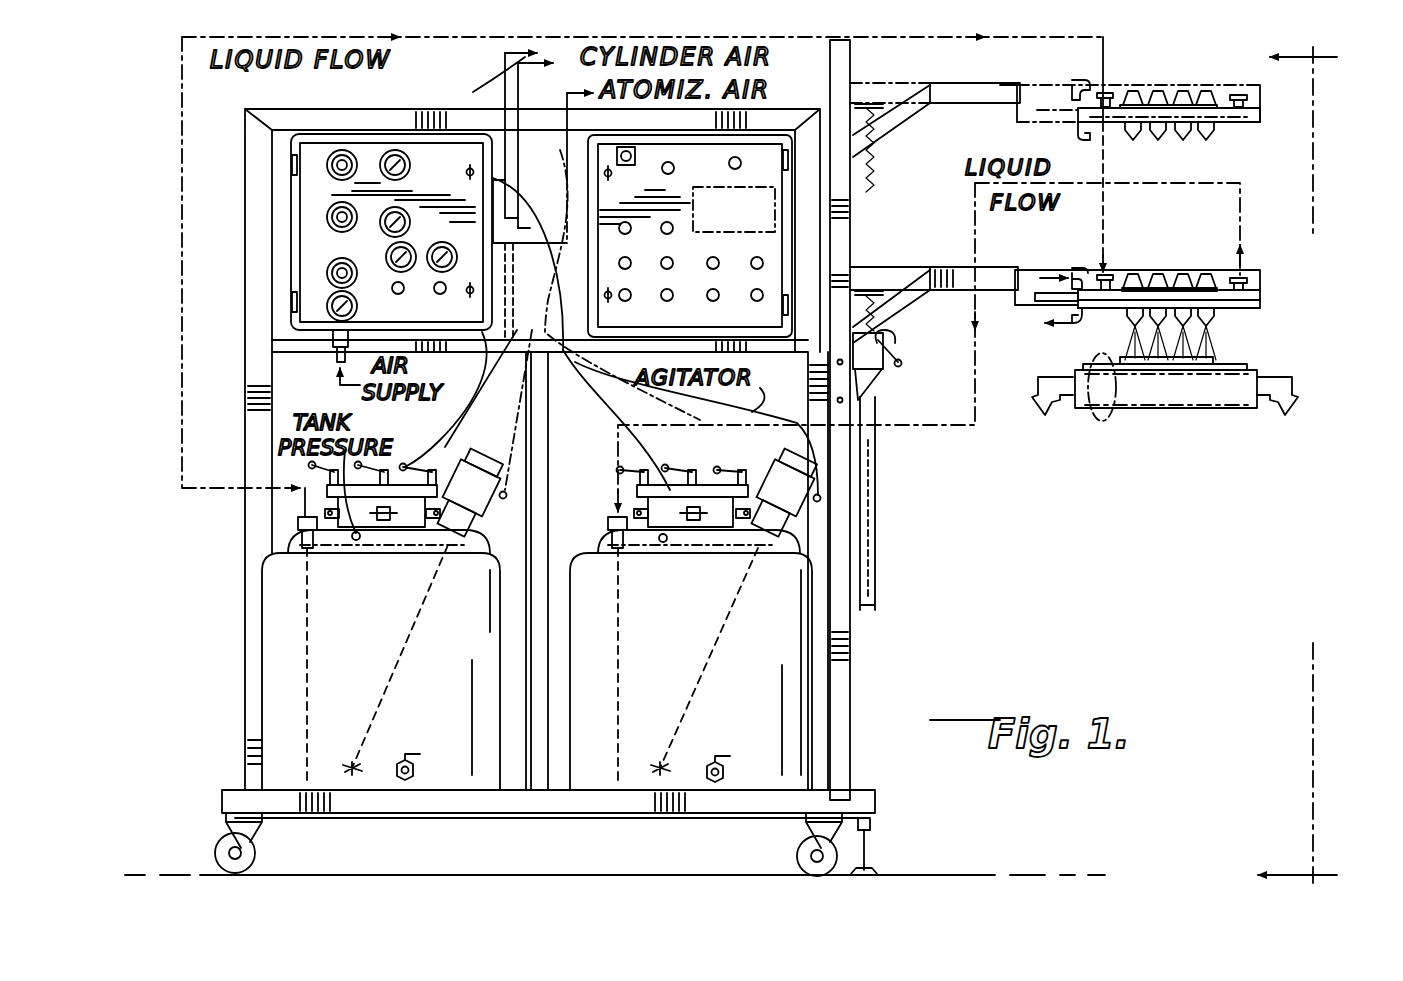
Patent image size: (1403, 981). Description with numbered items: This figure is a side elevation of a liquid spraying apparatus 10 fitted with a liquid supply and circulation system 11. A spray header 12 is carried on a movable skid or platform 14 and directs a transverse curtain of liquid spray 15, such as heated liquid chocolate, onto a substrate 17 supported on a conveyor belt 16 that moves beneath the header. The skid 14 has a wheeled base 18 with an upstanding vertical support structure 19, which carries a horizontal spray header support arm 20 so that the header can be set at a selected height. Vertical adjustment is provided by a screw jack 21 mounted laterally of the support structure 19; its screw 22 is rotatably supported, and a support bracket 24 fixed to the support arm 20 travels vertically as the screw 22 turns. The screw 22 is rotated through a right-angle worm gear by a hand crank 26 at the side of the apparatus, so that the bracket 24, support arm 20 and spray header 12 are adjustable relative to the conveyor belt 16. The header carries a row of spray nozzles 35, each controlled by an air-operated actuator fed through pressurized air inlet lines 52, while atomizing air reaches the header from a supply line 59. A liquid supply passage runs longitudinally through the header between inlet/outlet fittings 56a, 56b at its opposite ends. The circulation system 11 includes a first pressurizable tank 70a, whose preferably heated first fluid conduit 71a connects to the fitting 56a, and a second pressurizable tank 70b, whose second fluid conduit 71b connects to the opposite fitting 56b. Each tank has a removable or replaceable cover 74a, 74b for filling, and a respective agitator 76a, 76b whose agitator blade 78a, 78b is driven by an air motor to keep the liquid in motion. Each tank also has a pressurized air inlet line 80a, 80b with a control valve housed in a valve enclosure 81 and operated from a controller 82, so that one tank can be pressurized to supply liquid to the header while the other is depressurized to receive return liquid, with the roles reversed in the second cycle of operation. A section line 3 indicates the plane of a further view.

The section line 3- 3 is at (1312, 468).
The spraying apparatus 10 is at (208, 533).
The liquid supply and circulation system 11 is at (277, 622).
The spray header 12 is at (1262, 110).
The movable skid or platform 14 is at (245, 415).
The liquid spray 15 is at (1213, 347).
The conveyor belt 16 is at (1180, 408).
The substrate 17 is at (1097, 420).
The wheeled base 18 is at (862, 793).
The vertical support structure 19 is at (850, 632).
The spray header support arm 20 is at (995, 300).
The screw jack 21 is at (893, 322).
The screw 22 is at (878, 283).
The support bracket 24 is at (905, 287).
The hand crank 26 is at (900, 362).
The spray nozzle 35 is at (1213, 313).
The pressurized air inlet lines 52 is at (499, 195).
The inlet/outlet fitting 56a is at (1093, 273).
The inlet/outlet fitting 56b is at (1262, 275).
The atomizing air supply line 59 is at (567, 110).
The first pressurizable tank 70a is at (287, 716).
The second pressurizable tank 70b is at (802, 693).
The first fluid conduit 71a is at (1103, 237).
The second fluid conduit 71b is at (1255, 175).
The cover 74a is at (463, 415).
The cover 74b is at (712, 450).
The agitator 76a is at (487, 533).
The agitator 76b is at (820, 505).
The agitator blade 78a is at (380, 745).
The agitator blade 78b is at (690, 748).
The pressurized air inlet line 80a is at (482, 332).
The pressurized air inlet line 80b is at (603, 390).
The valve enclosure 81 is at (300, 215).
The controller 82 is at (790, 198).